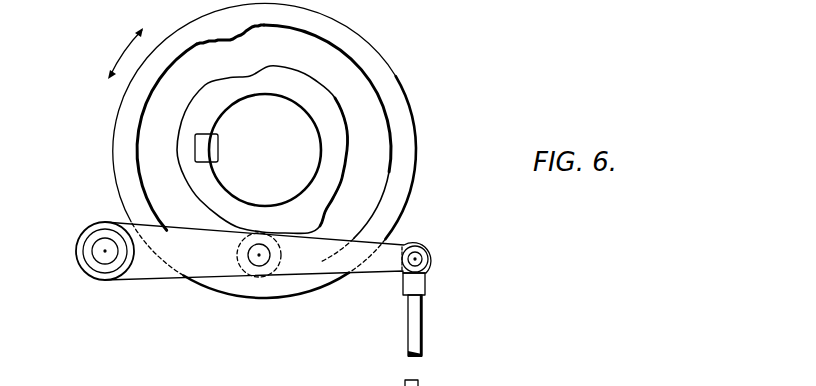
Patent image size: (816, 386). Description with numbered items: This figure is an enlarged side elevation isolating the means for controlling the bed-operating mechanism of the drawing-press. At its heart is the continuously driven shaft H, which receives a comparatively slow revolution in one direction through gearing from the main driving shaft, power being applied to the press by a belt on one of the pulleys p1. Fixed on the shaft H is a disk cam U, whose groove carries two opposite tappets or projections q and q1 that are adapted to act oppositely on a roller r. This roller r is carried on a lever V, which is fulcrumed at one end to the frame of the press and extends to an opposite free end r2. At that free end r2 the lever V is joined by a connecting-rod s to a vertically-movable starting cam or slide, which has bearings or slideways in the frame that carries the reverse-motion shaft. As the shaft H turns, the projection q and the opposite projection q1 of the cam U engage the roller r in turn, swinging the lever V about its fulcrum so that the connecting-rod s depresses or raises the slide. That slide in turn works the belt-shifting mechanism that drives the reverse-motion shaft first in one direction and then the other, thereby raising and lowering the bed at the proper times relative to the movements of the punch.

The disk cam U is at (417, 130).
The tappet or projection q1 is at (237, 40).
The tappet or projection q is at (262, 150).
The shaft H is at (258, 150).
The lever V is at (268, 251).
The pulley p1 is at (28, 288).
The roller r is at (250, 268).
The free end of lever r2 is at (430, 262).
The connecting-rod s is at (426, 344).